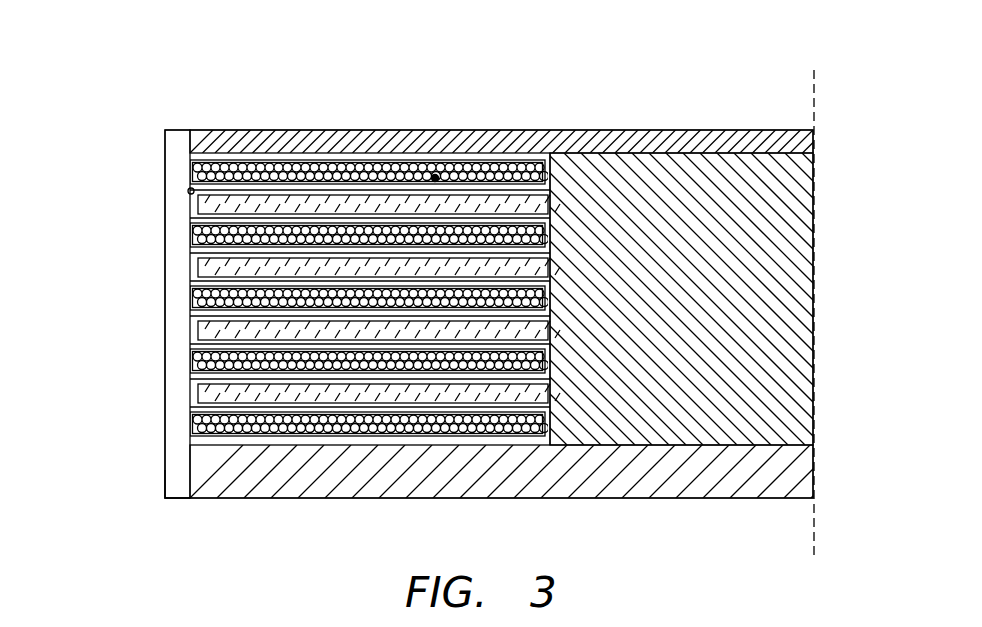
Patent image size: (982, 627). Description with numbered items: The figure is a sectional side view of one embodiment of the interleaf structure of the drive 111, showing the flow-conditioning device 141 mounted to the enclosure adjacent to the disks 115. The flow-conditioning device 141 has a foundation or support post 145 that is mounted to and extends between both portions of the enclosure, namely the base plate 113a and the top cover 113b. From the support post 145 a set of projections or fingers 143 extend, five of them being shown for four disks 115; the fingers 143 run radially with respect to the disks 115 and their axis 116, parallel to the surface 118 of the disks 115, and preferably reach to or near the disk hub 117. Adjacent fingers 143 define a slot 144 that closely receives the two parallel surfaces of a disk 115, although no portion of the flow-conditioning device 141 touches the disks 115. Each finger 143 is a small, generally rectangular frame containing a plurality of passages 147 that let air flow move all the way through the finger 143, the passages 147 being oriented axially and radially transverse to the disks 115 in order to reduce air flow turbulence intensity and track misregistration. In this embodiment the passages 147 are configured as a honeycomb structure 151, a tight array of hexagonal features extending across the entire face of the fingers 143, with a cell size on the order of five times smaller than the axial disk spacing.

The drive 111 is at (705, 50).
The base plate 113a is at (288, 498).
The top cover 113b is at (350, 131).
The disk 115 is at (197, 203).
The axis 116 is at (815, 108).
The disk hub 117 is at (797, 240).
The surface 118 is at (437, 190).
The flow-conditioning device 141 is at (118, 133).
The finger 143 is at (545, 173).
The slot 144 is at (189, 190).
The support post 145 is at (165, 472).
The passages 147 is at (260, 166).
The honeycomb structure 151 is at (462, 428).